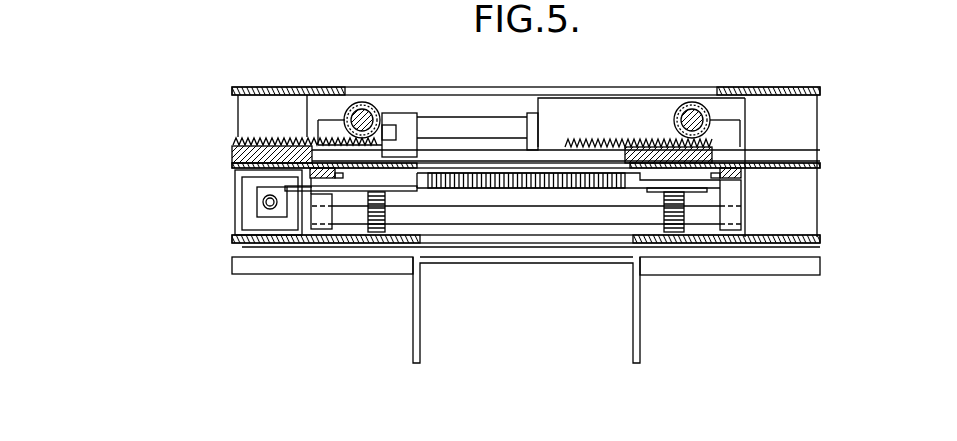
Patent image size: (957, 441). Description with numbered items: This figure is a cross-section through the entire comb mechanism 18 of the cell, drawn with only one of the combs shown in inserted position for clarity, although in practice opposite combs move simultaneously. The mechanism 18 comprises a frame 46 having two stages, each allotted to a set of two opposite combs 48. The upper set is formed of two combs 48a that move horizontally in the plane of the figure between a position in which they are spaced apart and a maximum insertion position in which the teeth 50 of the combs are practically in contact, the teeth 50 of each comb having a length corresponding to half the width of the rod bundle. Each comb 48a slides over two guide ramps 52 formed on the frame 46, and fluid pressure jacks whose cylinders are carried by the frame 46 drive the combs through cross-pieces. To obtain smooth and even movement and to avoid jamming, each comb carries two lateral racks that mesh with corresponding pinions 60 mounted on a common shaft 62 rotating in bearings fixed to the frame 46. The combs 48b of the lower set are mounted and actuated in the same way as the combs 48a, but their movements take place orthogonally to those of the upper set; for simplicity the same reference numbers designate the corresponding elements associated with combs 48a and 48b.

The comb mechanism 18 is at (232, 210).
The frame 46 is at (778, 238).
The comb 48 is at (408, 157).
The upper-set comb 48a is at (580, 155).
The lower-set comb 48b is at (637, 188).
The teeth 50 is at (487, 178).
The guide ramp 52 is at (317, 178).
The pinion 60 is at (380, 212).
The common shaft 62 is at (625, 215).